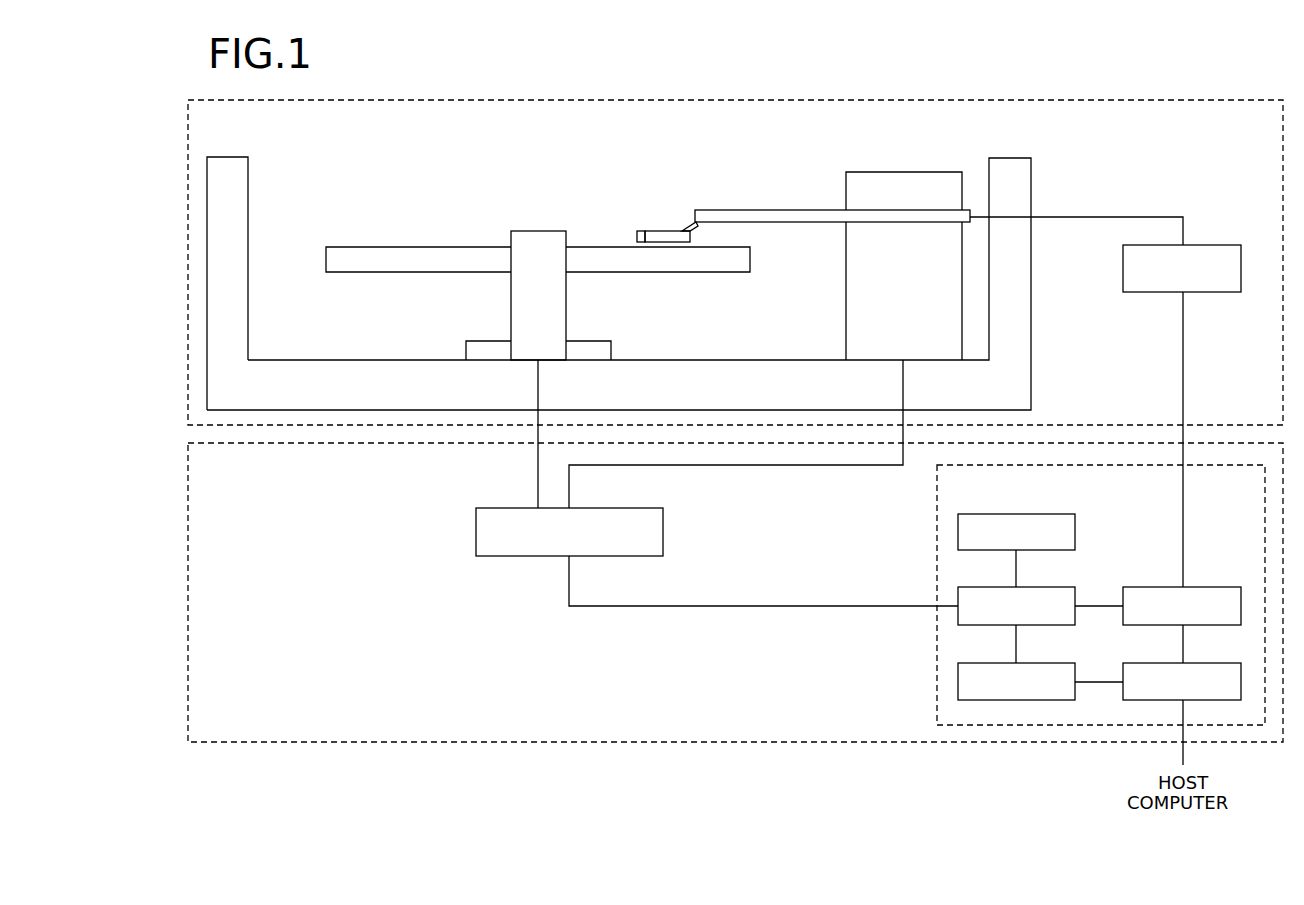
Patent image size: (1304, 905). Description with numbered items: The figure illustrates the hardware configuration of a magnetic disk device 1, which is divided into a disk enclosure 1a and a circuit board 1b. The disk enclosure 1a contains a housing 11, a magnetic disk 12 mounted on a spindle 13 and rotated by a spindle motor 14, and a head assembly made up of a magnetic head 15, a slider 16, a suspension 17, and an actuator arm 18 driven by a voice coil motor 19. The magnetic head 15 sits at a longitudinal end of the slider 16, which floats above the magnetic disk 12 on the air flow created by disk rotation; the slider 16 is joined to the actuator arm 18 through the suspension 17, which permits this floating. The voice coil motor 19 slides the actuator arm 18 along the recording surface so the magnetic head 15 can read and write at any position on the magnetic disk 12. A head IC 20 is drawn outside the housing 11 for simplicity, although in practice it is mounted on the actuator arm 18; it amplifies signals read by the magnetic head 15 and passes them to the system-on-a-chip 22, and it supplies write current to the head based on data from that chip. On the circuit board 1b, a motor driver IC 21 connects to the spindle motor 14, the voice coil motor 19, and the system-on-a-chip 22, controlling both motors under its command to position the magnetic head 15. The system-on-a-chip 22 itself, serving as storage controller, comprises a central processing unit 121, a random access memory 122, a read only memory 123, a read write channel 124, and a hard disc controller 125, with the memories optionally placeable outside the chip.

The magnetic disk device 1 is at (1075, 86).
The disk enclosure 1a is at (188, 147).
The circuit board 1b is at (188, 497).
The housing 11 is at (227, 157).
The magnetic disk 12 is at (385, 247).
The spindle 13 is at (539, 231).
The spindle motor 14 is at (588, 341).
The magnetic head 15 is at (640, 231).
The slider 16 is at (660, 231).
The suspension 17 is at (700, 232).
The actuator arm 18 is at (745, 210).
The voice coil motor 19 is at (905, 172).
The head IC 20 is at (1200, 245).
The motor driver IC 21 is at (620, 508).
The system-on-a-chip 22 is at (936, 718).
The central processing unit 121 is at (1031, 587).
The random access memory 122 is at (1031, 514).
The read only memory 123 is at (1031, 662).
The read write channel 124 is at (1197, 587).
The hard disc controller 125 is at (1197, 662).